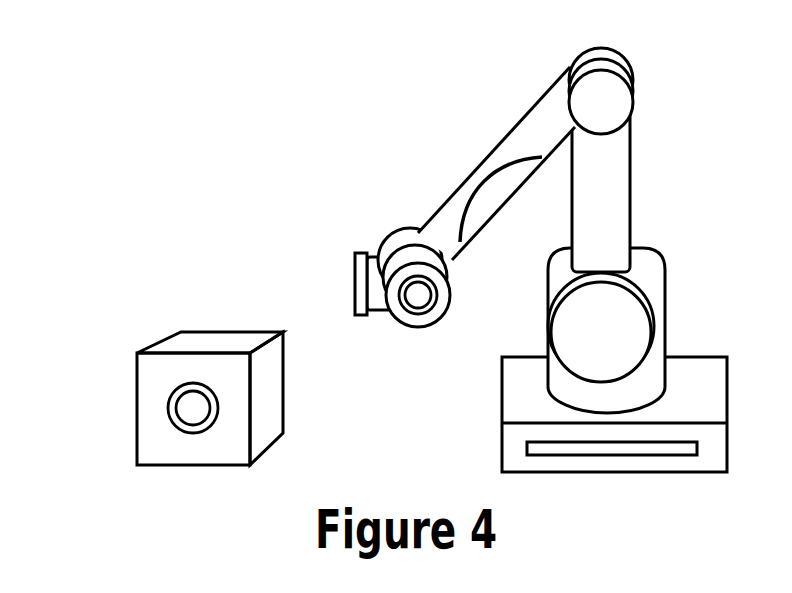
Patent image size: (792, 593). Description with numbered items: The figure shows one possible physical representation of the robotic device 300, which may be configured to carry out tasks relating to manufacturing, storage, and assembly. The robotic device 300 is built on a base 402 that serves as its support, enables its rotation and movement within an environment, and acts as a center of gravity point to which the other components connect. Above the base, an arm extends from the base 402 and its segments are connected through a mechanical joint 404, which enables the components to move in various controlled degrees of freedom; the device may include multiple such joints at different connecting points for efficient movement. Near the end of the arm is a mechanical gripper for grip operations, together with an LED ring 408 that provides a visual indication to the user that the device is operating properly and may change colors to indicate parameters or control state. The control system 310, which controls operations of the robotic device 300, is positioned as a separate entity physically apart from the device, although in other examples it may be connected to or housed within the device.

The robotic device 300 is at (400, 97).
The control system 310 is at (168, 335).
The base 402 is at (660, 347).
The mechanical joint 404 is at (630, 60).
The LED ring 408 is at (418, 312).